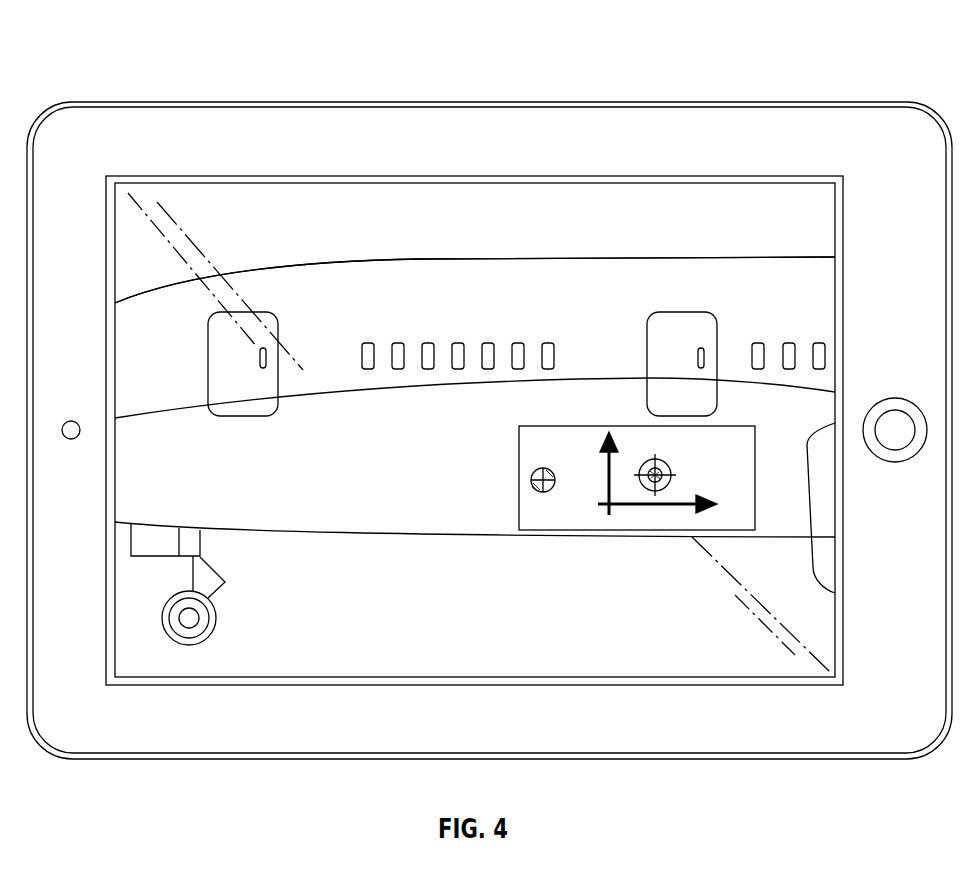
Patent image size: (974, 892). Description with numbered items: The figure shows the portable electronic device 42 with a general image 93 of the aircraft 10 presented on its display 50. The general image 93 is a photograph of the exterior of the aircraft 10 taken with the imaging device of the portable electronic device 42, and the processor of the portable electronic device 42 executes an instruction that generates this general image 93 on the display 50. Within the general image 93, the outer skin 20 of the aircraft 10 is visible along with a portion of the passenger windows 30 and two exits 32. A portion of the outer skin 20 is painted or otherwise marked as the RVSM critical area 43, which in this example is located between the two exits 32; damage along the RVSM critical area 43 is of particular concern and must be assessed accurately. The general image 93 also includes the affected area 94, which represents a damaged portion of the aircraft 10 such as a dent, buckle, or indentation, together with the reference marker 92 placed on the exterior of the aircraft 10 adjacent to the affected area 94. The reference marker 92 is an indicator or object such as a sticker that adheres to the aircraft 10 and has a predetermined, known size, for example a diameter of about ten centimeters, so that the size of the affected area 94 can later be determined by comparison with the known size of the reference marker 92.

The aircraft 10 is at (478, 236).
The outer skin 20 is at (650, 257).
The passenger windows 30 is at (368, 343).
The exits 32 is at (280, 328).
The portable electronic device 42 is at (363, 759).
The RVSM critical area 43 is at (588, 532).
The display 50 is at (330, 201).
The reference marker 92 is at (532, 477).
The general image 93 is at (795, 240).
The affected area 94 is at (665, 465).